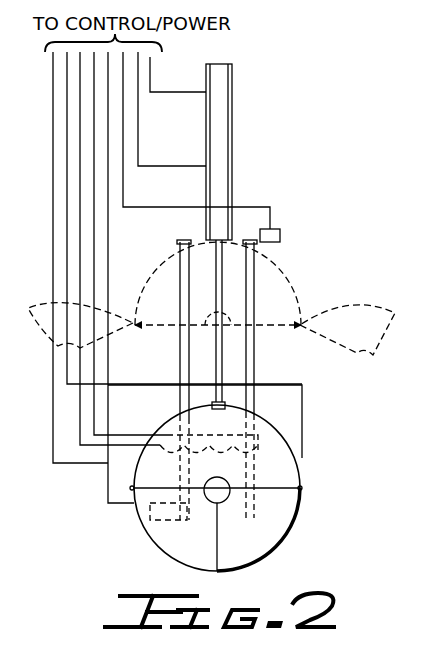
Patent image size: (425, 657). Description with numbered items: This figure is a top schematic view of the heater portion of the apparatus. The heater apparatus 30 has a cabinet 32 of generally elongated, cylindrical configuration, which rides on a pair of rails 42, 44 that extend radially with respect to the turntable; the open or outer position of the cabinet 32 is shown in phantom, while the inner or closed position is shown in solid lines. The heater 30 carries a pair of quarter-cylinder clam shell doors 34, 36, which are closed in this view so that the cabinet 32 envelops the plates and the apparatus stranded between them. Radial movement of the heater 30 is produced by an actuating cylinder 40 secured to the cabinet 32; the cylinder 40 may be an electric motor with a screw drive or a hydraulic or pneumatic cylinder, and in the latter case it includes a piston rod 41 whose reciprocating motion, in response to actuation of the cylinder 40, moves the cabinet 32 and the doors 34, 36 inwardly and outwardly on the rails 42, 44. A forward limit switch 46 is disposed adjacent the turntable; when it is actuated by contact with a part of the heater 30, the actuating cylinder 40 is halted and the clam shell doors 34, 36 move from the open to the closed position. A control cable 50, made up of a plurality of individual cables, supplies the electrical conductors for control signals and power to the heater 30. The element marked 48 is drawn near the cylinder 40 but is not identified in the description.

The heater apparatus 30 is at (308, 516).
The cabinet 32 is at (167, 267).
The clam shell door 34 is at (355, 318).
The clam shell door 36 is at (28, 301).
The actuating cylinder 40 is at (226, 150).
The piston rod 41 is at (217, 272).
The rail 42 is at (253, 373).
The rail 44 is at (180, 371).
The forward limit switch 46 is at (168, 518).
The limit switch 48 is at (278, 229).
The control cable 50 is at (48, 115).